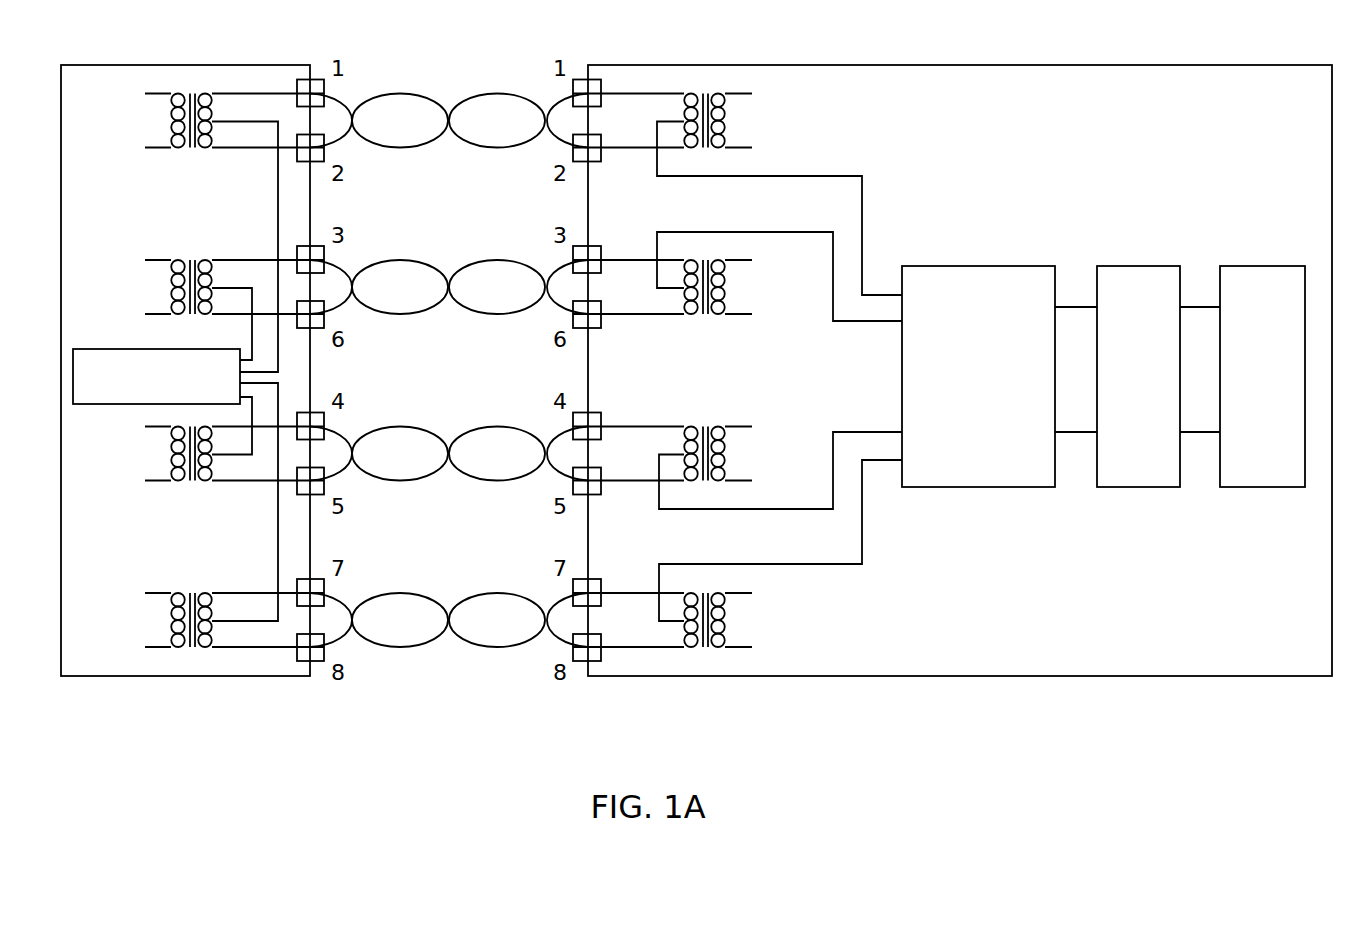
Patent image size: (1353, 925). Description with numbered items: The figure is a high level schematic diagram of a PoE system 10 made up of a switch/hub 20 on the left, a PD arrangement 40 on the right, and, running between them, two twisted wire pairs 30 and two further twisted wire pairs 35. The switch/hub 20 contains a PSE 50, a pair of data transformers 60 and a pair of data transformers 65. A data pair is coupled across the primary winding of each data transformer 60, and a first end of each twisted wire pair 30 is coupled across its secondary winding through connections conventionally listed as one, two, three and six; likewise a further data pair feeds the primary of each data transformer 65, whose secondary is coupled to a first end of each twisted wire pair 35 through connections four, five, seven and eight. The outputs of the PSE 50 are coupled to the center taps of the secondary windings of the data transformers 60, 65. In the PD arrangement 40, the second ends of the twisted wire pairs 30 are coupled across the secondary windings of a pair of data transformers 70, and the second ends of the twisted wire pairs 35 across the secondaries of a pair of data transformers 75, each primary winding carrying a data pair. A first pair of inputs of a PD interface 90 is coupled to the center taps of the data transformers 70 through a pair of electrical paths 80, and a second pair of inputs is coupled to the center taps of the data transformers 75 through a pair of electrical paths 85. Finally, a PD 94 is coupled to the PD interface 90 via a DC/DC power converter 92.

The PoE system 10 is at (437, 28).
The switch/hub 20 is at (61, 122).
The twisted wire pairs 30 is at (490, 148).
The twisted wire pairs 35 is at (490, 481).
The PD arrangement 40 is at (975, 65).
The PSE 50 is at (73, 378).
The data transformers 60 is at (205, 92).
The data transformers 65 is at (205, 481).
The data transformers 70 is at (718, 92).
The data transformers 75 is at (718, 426).
The electrical paths 80 is at (835, 176).
The electrical paths 85 is at (805, 509).
The PD interface 90 is at (993, 488).
The DC/DC power converter 92 is at (1166, 488).
The PD 94 is at (1260, 266).